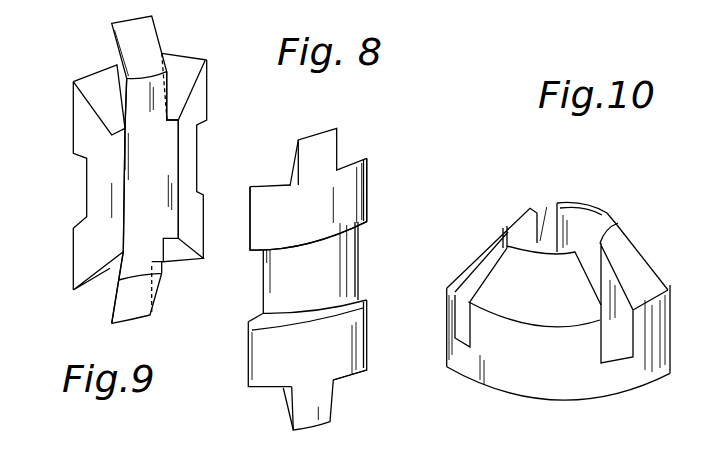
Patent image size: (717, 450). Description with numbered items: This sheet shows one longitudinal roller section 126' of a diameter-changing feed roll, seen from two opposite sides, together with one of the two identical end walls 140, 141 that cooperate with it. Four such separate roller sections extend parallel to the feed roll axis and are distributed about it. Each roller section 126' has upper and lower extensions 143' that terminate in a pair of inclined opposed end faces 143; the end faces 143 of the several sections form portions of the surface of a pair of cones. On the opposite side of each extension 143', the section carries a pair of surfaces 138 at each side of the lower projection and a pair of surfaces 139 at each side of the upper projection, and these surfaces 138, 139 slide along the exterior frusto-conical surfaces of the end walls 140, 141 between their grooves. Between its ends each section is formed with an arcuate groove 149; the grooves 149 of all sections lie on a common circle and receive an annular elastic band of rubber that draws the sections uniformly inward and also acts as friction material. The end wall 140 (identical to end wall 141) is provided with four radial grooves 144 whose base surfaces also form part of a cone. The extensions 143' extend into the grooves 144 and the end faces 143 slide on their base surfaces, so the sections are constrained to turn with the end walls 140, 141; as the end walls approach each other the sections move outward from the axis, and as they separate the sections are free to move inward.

In FIG. 9, the longitudinal roller section 126' is at (182, 198).
In FIG. 8, the longitudinal roller section 126' is at (290, 204).
In FIG. 9, the surfaces 138 is at (178, 247).
In FIG. 9, the surfaces 139 is at (100, 82).
In FIG. 9, the inclined end faces 143 is at (156, 169).
In FIG. 8, the inclined end faces 143 is at (274, 285).
In FIG. 8, the extensions 143' is at (344, 265).
In FIG. 9, the arcuate groove 149 is at (197, 150).
In FIG. 8, the arcuate groove 149 is at (273, 300).
In FIG. 10, the radial grooves 144 is at (547, 223).
In FIG. 10, the end wall 140 is at (558, 333).
In FIG. 10, the end wall 141 is at (492, 367).